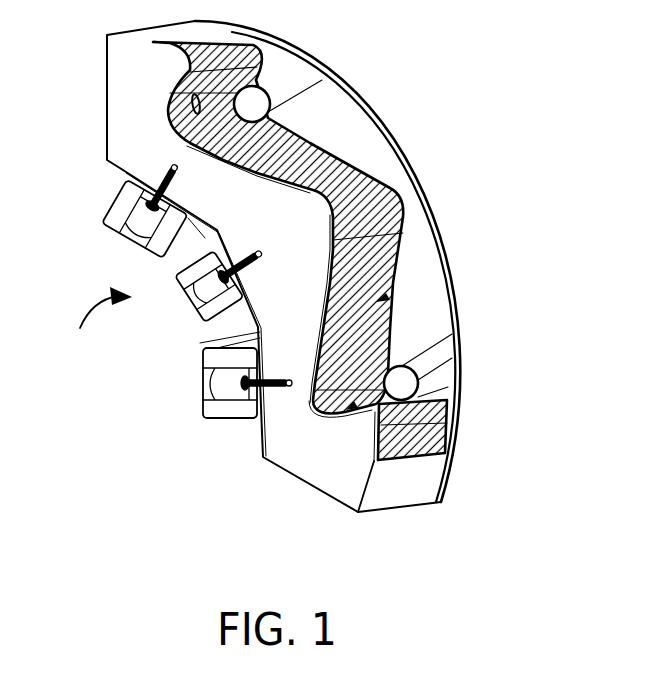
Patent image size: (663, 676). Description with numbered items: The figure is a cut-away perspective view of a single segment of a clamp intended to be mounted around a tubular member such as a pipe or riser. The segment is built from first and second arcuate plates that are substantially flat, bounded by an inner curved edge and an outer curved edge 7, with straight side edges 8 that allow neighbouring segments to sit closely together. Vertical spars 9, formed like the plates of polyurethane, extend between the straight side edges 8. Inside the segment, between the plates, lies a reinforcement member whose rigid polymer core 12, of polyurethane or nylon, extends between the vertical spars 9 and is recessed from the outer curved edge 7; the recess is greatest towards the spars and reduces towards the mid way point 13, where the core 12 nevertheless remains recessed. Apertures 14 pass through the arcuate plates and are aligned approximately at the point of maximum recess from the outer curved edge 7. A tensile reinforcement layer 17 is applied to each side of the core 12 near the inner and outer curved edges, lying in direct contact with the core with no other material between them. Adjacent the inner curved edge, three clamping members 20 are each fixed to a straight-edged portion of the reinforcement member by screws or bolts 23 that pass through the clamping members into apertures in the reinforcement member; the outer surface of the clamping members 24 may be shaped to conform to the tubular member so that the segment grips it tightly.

The outer curved edge 7 is at (363, 99).
The side edges 8 is at (108, 95).
The vertical spars 9 is at (412, 478).
The polymer core 12 is at (287, 232).
The mid way point 13 is at (412, 186).
The apertures 14 is at (254, 102).
The tensile reinforcement layer 17 is at (388, 297).
The clamping members 20 is at (96, 325).
The screws or bolts 23 is at (203, 287).
The outer surface of the clamping members 24 is at (129, 242).